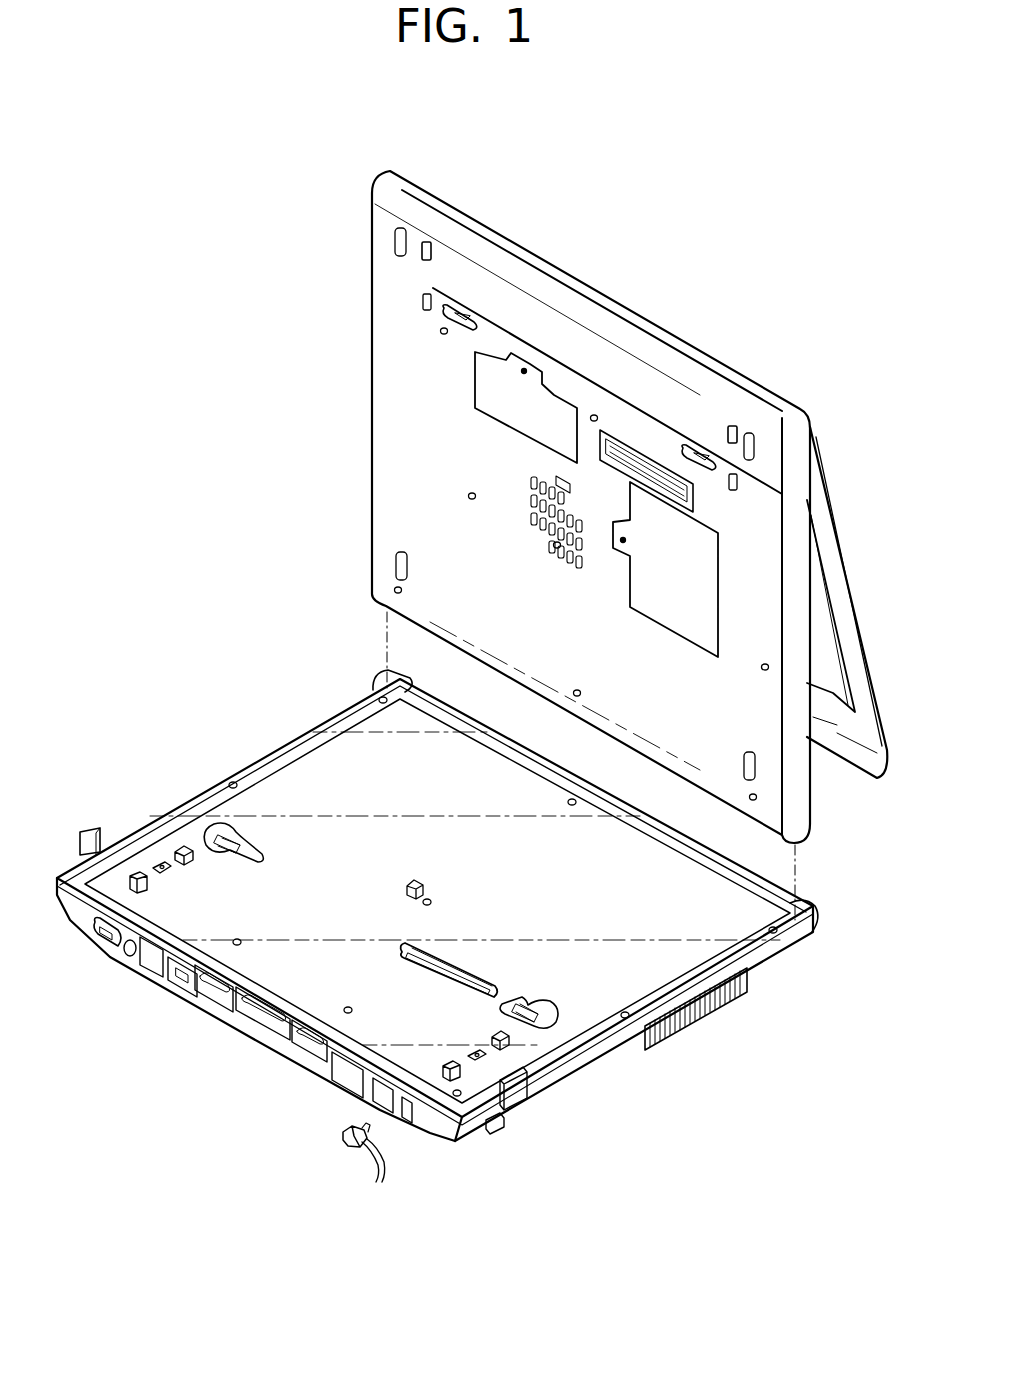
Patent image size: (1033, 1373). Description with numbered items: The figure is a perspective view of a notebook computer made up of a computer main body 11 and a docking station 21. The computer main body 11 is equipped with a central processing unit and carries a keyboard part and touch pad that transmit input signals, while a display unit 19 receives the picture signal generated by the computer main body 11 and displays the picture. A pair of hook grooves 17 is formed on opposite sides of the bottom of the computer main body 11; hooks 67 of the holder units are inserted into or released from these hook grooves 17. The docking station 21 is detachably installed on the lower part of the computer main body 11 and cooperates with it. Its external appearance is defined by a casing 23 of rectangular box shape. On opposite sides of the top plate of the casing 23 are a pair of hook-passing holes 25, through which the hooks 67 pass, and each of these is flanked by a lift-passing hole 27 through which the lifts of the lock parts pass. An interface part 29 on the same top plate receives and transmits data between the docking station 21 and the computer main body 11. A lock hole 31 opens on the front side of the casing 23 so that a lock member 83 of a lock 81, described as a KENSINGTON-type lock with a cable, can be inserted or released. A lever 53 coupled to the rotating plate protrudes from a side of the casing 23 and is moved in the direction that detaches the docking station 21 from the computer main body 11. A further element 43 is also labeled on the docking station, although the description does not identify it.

The computer main body 11 is at (355, 398).
The hook grooves 17 is at (430, 241).
The display unit 19 is at (878, 790).
The docking station 21 is at (222, 765).
The casing 23 is at (766, 966).
The hook-passing holes 25 is at (134, 886).
The lift-passing holes 27 is at (196, 866).
The interface part 29 is at (428, 948).
The lock hole 31 is at (423, 1110).
The latch 43 is at (108, 944).
The lever 53 is at (490, 1122).
The hooks 67 is at (162, 872).
The lock 81 is at (334, 1163).
The lock member 83 is at (374, 1148).